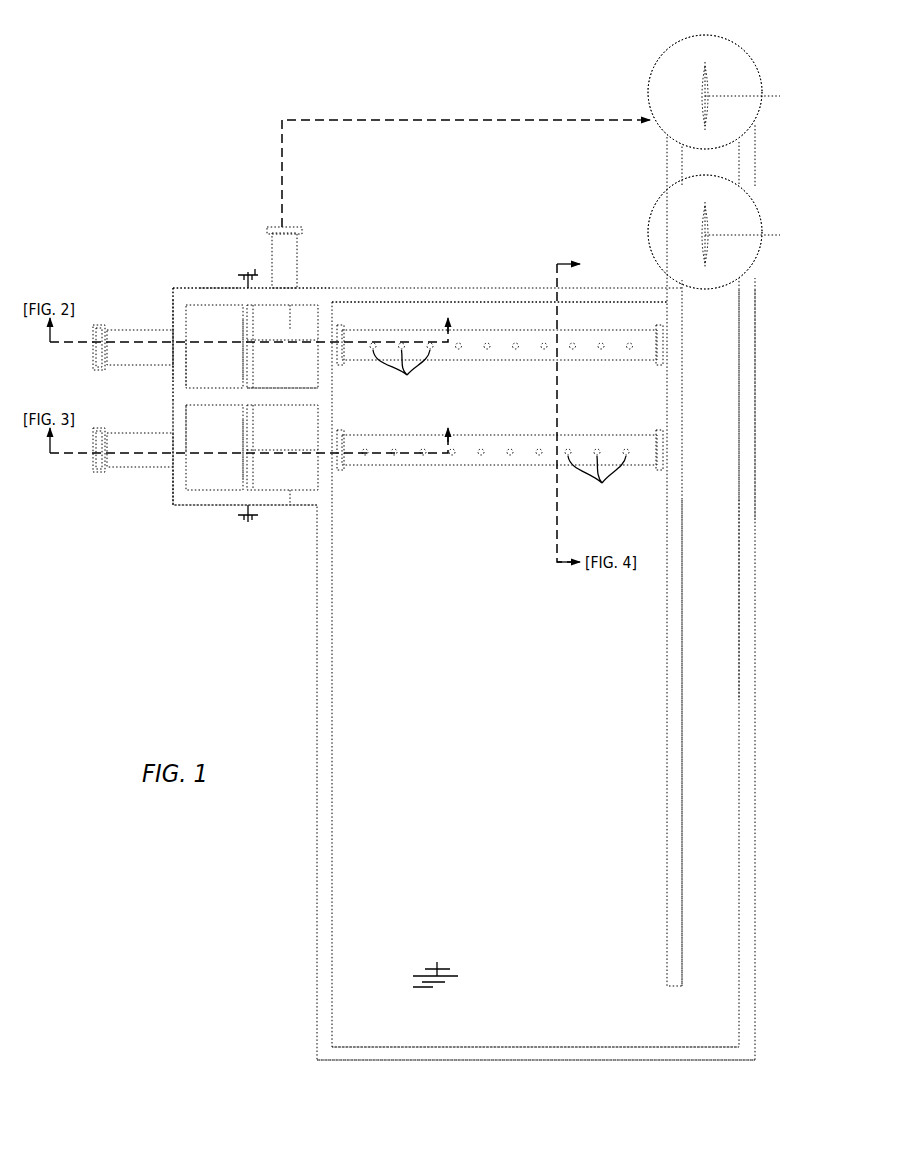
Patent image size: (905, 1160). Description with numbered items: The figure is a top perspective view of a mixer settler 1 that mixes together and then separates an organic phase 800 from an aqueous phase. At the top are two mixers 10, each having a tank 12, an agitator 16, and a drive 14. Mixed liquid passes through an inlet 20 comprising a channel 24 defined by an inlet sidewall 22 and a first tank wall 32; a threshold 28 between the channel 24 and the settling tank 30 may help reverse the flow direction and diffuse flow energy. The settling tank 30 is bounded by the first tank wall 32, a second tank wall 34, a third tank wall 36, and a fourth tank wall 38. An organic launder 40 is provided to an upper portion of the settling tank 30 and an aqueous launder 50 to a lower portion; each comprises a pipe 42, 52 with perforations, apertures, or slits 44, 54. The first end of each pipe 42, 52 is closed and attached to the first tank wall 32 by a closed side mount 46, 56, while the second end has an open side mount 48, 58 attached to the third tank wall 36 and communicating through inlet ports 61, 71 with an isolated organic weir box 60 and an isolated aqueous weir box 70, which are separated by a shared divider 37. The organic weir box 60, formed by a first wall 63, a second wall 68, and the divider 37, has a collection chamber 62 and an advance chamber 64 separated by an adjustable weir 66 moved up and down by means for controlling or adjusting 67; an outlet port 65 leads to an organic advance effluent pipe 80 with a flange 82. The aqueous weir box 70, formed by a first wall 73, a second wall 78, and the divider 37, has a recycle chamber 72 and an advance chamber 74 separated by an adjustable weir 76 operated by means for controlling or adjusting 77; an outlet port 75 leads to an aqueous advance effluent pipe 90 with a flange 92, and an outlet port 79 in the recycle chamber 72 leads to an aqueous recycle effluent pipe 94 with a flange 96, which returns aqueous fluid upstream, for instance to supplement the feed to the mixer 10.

The mixer settler 1 is at (208, 157).
The mixer 10 is at (643, 58).
The tank 12 is at (650, 92).
The drive 14 is at (743, 97).
The agitator 16 is at (705, 79).
The inlet 20 is at (725, 312).
The inlet sidewall 22 is at (755, 495).
The channel 24 is at (732, 637).
The threshold 28 is at (672, 1030).
The settling tank 30 is at (535, 897).
The first tank wall 32 is at (667, 735).
The second tank wall 34 is at (497, 1050).
The third tank wall 36 is at (317, 695).
The divider 37 is at (292, 390).
The fourth tank wall 38 is at (485, 293).
The organic launder 40 is at (437, 466).
The pipe 42 is at (500, 466).
The perforations, apertures, or slits 44 is at (597, 481).
The closed side mount 46 is at (660, 462).
The open side mount 48 is at (338, 468).
The aqueous launder 50 is at (485, 362).
The pipe 52 is at (530, 362).
The perforations, apertures, or slits 54 is at (401, 373).
The closed side mount 56 is at (660, 362).
The open side mount 58 is at (342, 352).
The isolated organic weir box 60 is at (198, 508).
The inlet port 61 is at (290, 447).
The collection chamber 62 is at (282, 447).
The first wall 63 is at (173, 490).
The advance chamber 64 is at (214, 447).
The outlet port 65 is at (200, 448).
The adjustable weir 66 is at (248, 448).
The means for controlling or adjusting 67 is at (248, 522).
The second wall 68 is at (285, 498).
The isolated aqueous weir box 70 is at (190, 288).
The inlet port 71 is at (290, 352).
The recycle chamber 72 is at (282, 346).
The first wall 73 is at (173, 322).
The advance chamber 74 is at (214, 346).
The outlet port 75 is at (192, 355).
The adjustable weir 76 is at (250, 385).
The means for controlling or adjusting 77 is at (248, 272).
The second wall 78 is at (222, 295).
The outlet port 79 is at (291, 310).
The organic advance effluent pipe 80 is at (122, 462).
The flange 82 is at (98, 472).
The aqueous advance effluent pipe 90 is at (135, 330).
The flange 92 is at (103, 330).
The aqueous recycle effluent pipe 94 is at (297, 260).
The flange 96 is at (297, 229).
The organic phase 800 is at (437, 968).